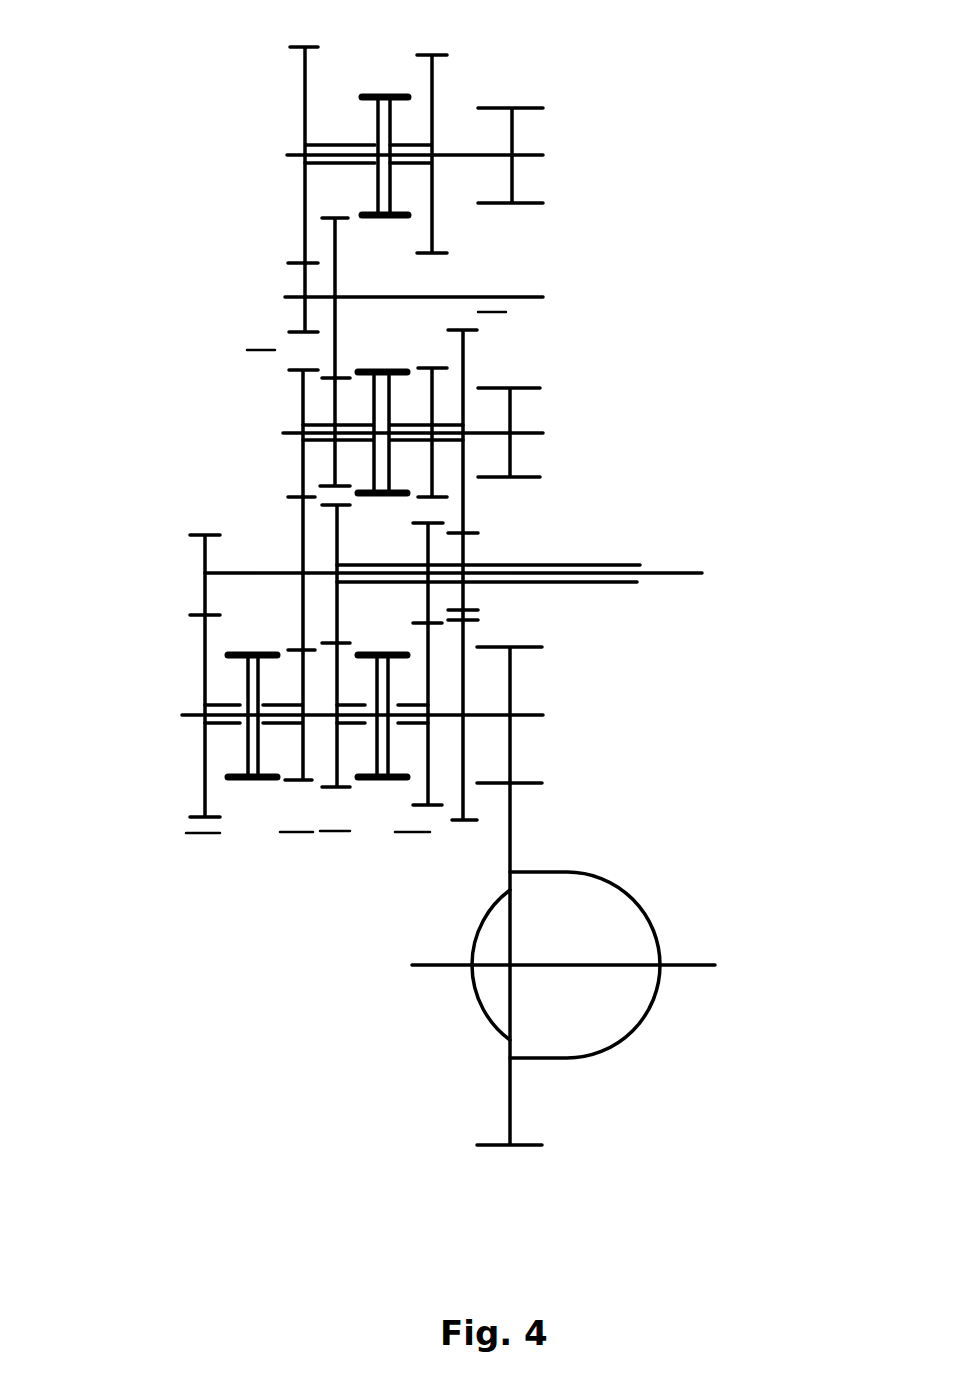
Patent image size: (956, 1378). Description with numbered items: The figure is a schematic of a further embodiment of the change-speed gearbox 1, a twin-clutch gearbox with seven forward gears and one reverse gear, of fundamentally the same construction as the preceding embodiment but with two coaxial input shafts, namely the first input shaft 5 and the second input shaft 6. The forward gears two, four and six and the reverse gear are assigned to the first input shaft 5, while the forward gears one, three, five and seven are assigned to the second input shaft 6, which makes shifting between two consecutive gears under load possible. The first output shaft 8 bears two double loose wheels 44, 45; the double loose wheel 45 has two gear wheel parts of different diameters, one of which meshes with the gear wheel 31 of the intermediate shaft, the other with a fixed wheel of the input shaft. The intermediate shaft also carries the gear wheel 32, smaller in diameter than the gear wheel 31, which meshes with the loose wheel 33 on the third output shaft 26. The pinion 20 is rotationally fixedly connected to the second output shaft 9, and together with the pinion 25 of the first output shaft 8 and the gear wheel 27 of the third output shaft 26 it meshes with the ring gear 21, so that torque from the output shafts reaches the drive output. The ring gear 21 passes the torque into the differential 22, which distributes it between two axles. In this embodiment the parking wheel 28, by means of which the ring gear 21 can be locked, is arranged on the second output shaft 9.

The change-speed gearbox 1 is at (96, 147).
The first input shaft 5 is at (637, 582).
The second input shaft 6 is at (668, 577).
The first output shaft 8 is at (285, 433).
The second output shaft 9 is at (190, 718).
The pinion 20 is at (540, 648).
The ring gear 21 is at (525, 1147).
The differential 22 is at (613, 943).
The pinion 25 is at (535, 478).
The third output shaft 26 is at (288, 156).
The gear wheel 27 is at (537, 205).
The parking wheel 28 is at (465, 822).
The gear wheel 31 is at (336, 281).
The gear wheel 32 is at (298, 270).
The loose wheel 33 is at (304, 85).
The double loose wheel 44 is at (476, 365).
The double loose wheel 45 is at (292, 398).